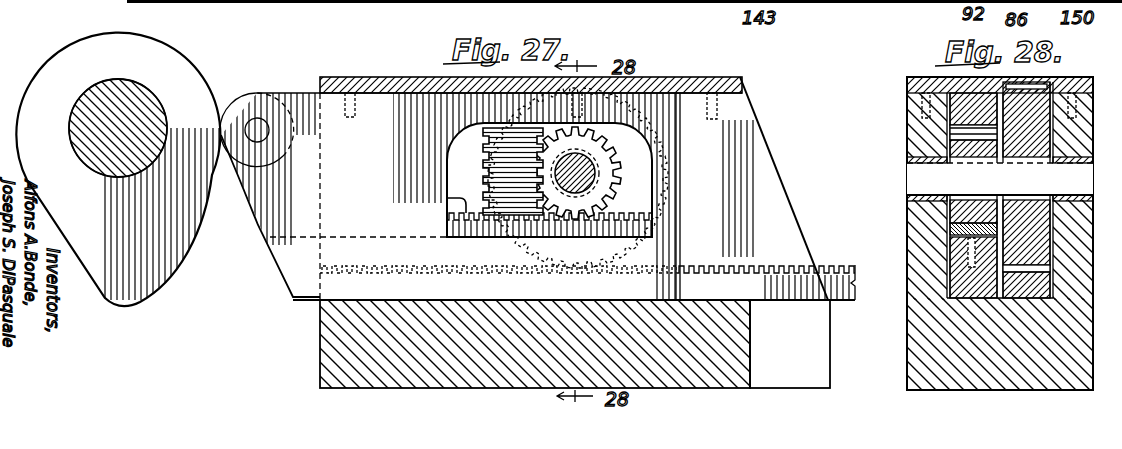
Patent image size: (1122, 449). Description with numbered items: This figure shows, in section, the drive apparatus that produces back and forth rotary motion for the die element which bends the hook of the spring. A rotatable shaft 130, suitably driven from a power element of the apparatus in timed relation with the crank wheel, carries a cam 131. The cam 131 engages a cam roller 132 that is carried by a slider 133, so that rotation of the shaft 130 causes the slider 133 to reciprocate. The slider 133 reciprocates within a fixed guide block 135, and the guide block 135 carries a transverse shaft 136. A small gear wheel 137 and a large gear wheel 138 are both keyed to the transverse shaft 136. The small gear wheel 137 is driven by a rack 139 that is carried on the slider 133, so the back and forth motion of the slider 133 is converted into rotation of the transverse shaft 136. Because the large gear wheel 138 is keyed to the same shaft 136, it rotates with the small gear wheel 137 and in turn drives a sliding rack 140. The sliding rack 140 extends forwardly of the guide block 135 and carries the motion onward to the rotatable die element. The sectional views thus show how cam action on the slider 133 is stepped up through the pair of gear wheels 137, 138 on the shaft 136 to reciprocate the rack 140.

In FIG. 27, the rotatable shaft 130 is at (96, 84).
In FIG. 27, the cam 131 is at (175, 26).
In FIG. 27, the cam roller 132 is at (233, 93).
In FIG. 27, the slider 133 is at (270, 258).
In FIG. 28, the slider 133 is at (945, 265).
In FIG. 27, the fixed guide block 135 is at (320, 318).
In FIG. 28, the fixed guide block 135 is at (907, 110).
In FIG. 27, the transverse shaft 136 is at (593, 185).
In FIG. 28, the transverse shaft 136 is at (907, 172).
In FIG. 27, the small gear wheel 137 is at (548, 171).
In FIG. 28, the small gear wheel 137 is at (950, 203).
In FIG. 27, the large gear wheel 138 is at (566, 180).
In FIG. 28, the large gear wheel 138 is at (1030, 83).
In FIG. 27, the rack 139 is at (458, 198).
In FIG. 28, the rack 139 is at (945, 232).
In FIG. 27, the sliding rack 140 is at (843, 302).
In FIG. 28, the sliding rack 140 is at (1025, 292).